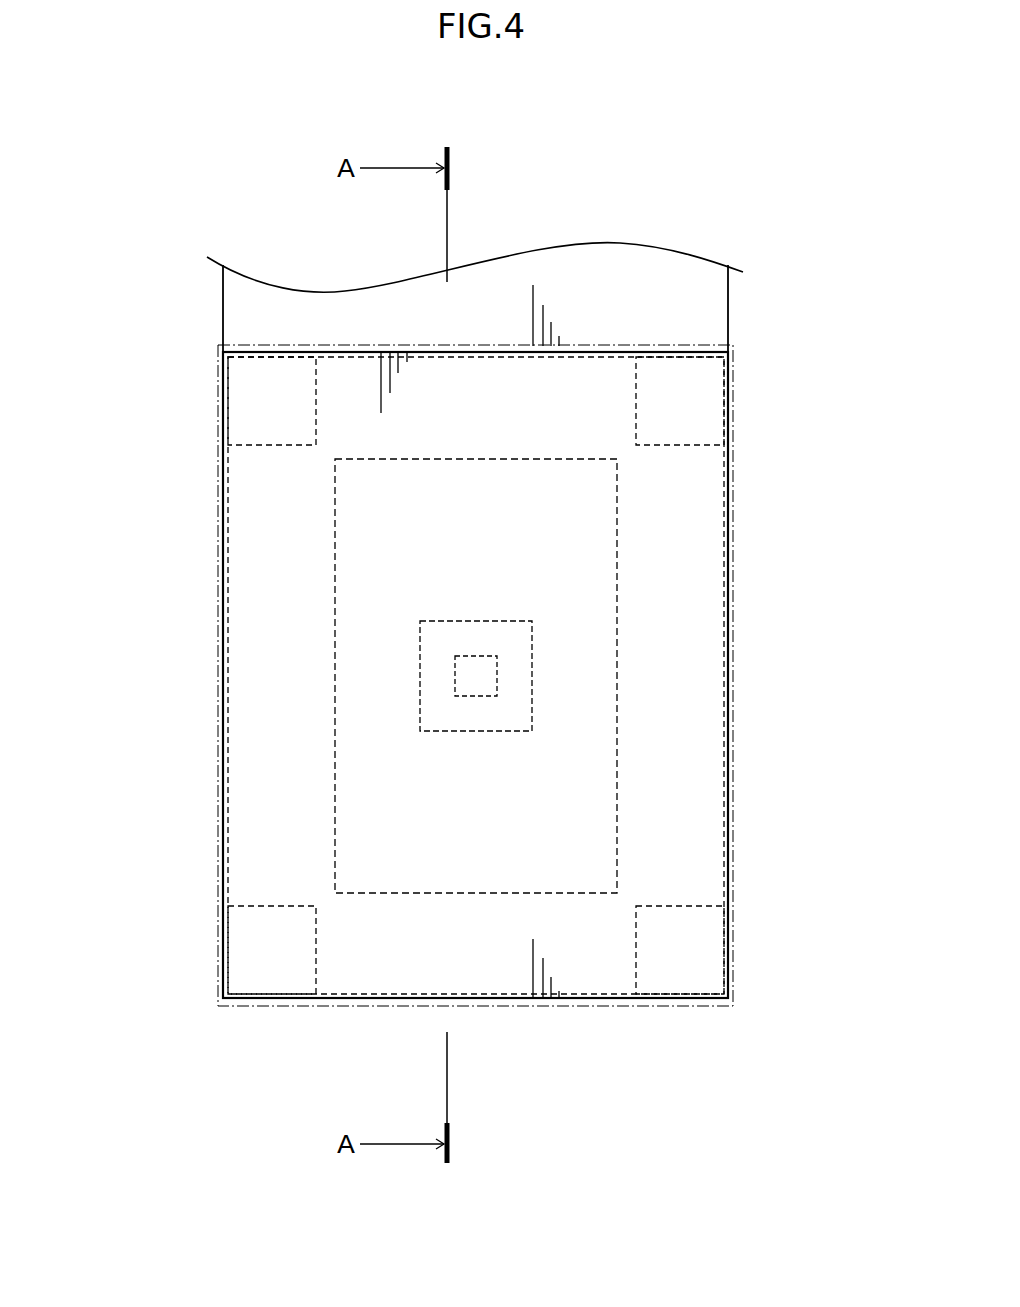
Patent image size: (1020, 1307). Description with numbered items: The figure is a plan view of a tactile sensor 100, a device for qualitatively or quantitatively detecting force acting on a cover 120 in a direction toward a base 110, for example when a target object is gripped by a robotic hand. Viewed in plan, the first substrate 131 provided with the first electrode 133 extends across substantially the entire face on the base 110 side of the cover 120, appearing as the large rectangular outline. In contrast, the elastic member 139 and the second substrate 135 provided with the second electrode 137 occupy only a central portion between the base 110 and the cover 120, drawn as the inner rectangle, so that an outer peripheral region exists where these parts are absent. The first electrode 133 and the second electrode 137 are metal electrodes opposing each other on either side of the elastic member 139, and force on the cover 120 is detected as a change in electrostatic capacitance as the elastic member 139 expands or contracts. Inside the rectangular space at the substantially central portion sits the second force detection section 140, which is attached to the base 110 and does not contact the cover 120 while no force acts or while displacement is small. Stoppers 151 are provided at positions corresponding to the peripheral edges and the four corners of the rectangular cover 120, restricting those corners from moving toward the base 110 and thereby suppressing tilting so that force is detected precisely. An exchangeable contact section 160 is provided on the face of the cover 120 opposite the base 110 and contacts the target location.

The tactile sensor 100 is at (815, 453).
The base 110 is at (232, 312).
The cover 120 is at (223, 640).
The first substrate 131 is at (402, 675).
The first electrode 133 is at (265, 670).
The second substrate 135 is at (327, 676).
The second electrode 137 is at (327, 676).
The elastic member 139 is at (358, 757).
The second force detection section 140 is at (488, 675).
The stoppers 151 is at (278, 435).
The contact section 160 is at (218, 600).